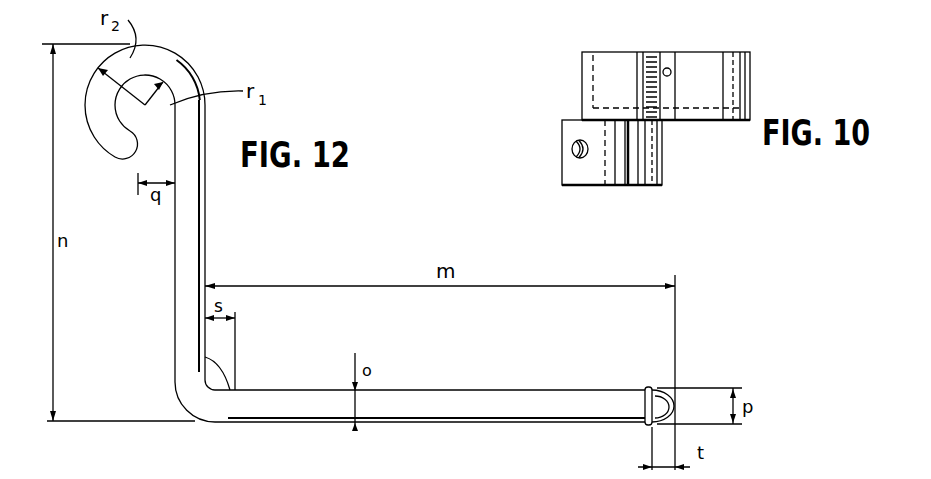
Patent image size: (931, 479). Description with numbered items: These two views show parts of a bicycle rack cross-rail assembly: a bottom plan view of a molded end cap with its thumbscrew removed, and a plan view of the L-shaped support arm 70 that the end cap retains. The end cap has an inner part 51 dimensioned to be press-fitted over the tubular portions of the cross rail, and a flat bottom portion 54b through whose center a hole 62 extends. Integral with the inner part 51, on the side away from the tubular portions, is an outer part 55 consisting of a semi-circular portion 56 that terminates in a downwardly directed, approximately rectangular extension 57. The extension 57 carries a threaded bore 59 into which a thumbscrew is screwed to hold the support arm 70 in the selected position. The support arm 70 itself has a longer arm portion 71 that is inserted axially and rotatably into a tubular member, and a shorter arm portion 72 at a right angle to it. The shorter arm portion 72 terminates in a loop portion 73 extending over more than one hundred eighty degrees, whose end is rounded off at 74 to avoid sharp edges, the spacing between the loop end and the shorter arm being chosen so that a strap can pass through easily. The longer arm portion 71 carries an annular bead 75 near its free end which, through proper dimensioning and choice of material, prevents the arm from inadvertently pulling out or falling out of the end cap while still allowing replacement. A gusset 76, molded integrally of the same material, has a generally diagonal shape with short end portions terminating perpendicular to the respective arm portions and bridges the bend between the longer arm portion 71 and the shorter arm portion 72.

In FIG. 10, the inner part 51 is at (752, 82).
In FIG. 10, the flat bottom portion 54b is at (668, 88).
In FIG. 10, the outer part 55 is at (668, 157).
In FIG. 10, the semi-circular portion 56 is at (662, 178).
In FIG. 10, the rectangular extension 57 is at (575, 188).
In FIG. 10, the threaded bore 59 is at (571, 149).
In FIG. 10, the hole 62 is at (667, 67).
In FIG. 12, the support arm 70 is at (212, 220).
In FIG. 12, the longer arm portion 71 is at (521, 398).
In FIG. 12, the shorter arm portion 72 is at (193, 258).
In FIG. 12, the loop portion 73 is at (178, 52).
In FIG. 12, the rounded end 74 is at (135, 155).
In FIG. 12, the annular bead 75 is at (652, 387).
In FIG. 12, the gusset 76 is at (230, 380).